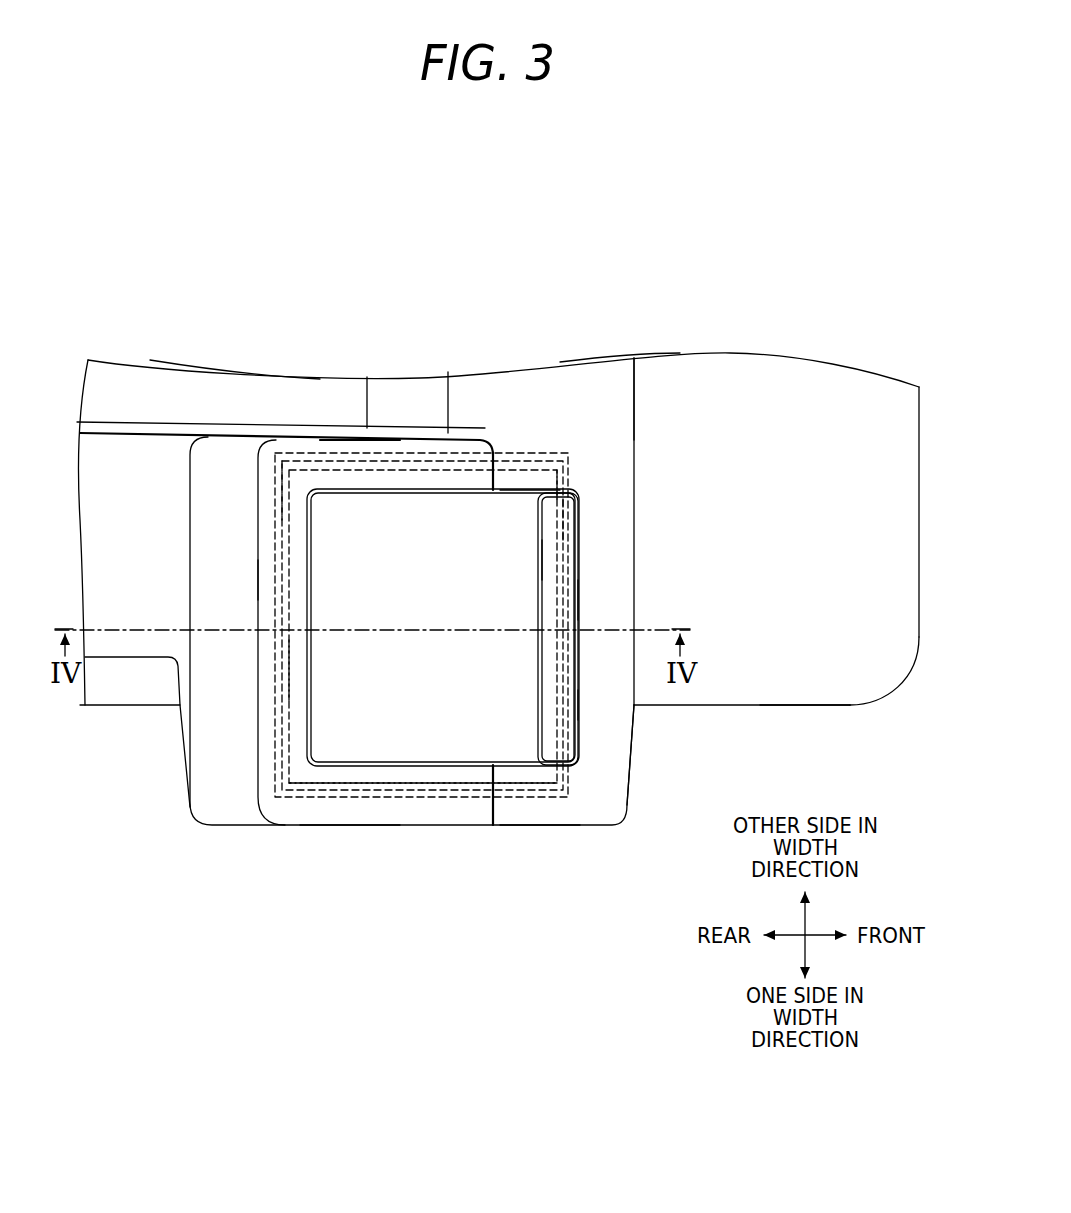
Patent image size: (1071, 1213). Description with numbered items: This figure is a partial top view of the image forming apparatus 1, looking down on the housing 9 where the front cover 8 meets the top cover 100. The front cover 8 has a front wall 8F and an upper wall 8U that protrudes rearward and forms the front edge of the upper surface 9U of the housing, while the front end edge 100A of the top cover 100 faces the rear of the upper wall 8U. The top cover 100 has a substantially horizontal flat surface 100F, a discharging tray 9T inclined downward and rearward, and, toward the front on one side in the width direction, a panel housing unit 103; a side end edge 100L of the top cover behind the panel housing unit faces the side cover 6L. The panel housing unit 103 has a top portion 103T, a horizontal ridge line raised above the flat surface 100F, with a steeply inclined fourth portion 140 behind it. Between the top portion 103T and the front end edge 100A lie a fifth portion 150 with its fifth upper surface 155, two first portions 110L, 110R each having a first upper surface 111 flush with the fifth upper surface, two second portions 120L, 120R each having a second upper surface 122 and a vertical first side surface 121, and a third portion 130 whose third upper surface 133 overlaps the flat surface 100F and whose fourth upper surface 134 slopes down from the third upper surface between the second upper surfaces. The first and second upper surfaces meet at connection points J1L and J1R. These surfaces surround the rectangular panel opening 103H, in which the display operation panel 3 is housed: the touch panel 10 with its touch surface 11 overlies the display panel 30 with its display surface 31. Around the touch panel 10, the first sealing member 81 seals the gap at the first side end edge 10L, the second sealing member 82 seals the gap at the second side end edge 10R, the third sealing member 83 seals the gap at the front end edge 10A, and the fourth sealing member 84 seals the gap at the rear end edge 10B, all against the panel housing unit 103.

The image forming apparatus 1 is at (148, 830).
The display operation panel 3 is at (476, 570).
The side cover 6L is at (103, 710).
The front cover 8 is at (863, 705).
The front wall 8F is at (919, 574).
The upper wall 8U is at (806, 673).
The housing 9 is at (86, 356).
The discharging tray 9T is at (152, 388).
The upper surface 9U is at (590, 405).
The touch panel 10 is at (458, 705).
The front end edge 10A is at (572, 705).
The rear end edge 10B is at (277, 517).
The first side end edge 10L is at (400, 798).
The second side end edge 10R is at (424, 470).
The touch surface 11 is at (422, 730).
The display panel 30 is at (451, 596).
The display surface 31 is at (420, 618).
The first sealing member 81 is at (328, 790).
The second sealing member 82 is at (299, 465).
The third sealing member 83 is at (565, 518).
The fourth sealing member 84 is at (287, 668).
The top cover 100 is at (100, 488).
The front end edge 100A is at (636, 490).
The flat surface 100F is at (603, 423).
The side end edge 100L is at (103, 657).
The panel housing unit 103 is at (252, 452).
The panel opening 103H is at (314, 580).
The top portion 103T is at (257, 575).
The first portion 110R is at (351, 482).
The first portion 110L is at (352, 808).
The first upper surface 111 is at (370, 483).
The second portion 120R is at (522, 482).
The second portion 120L is at (535, 808).
The first side surface 121 is at (528, 498).
The second upper surface 122 is at (546, 480).
The third portion 130 is at (603, 688).
The third upper surface 133 is at (600, 606).
The fourth upper surface 134 is at (548, 570).
The fourth portion 140 is at (230, 538).
The fifth portion 150 is at (270, 722).
The fifth upper surface 155 is at (267, 750).
The connection point J1R is at (493, 477).
The connection point J1L is at (493, 774).